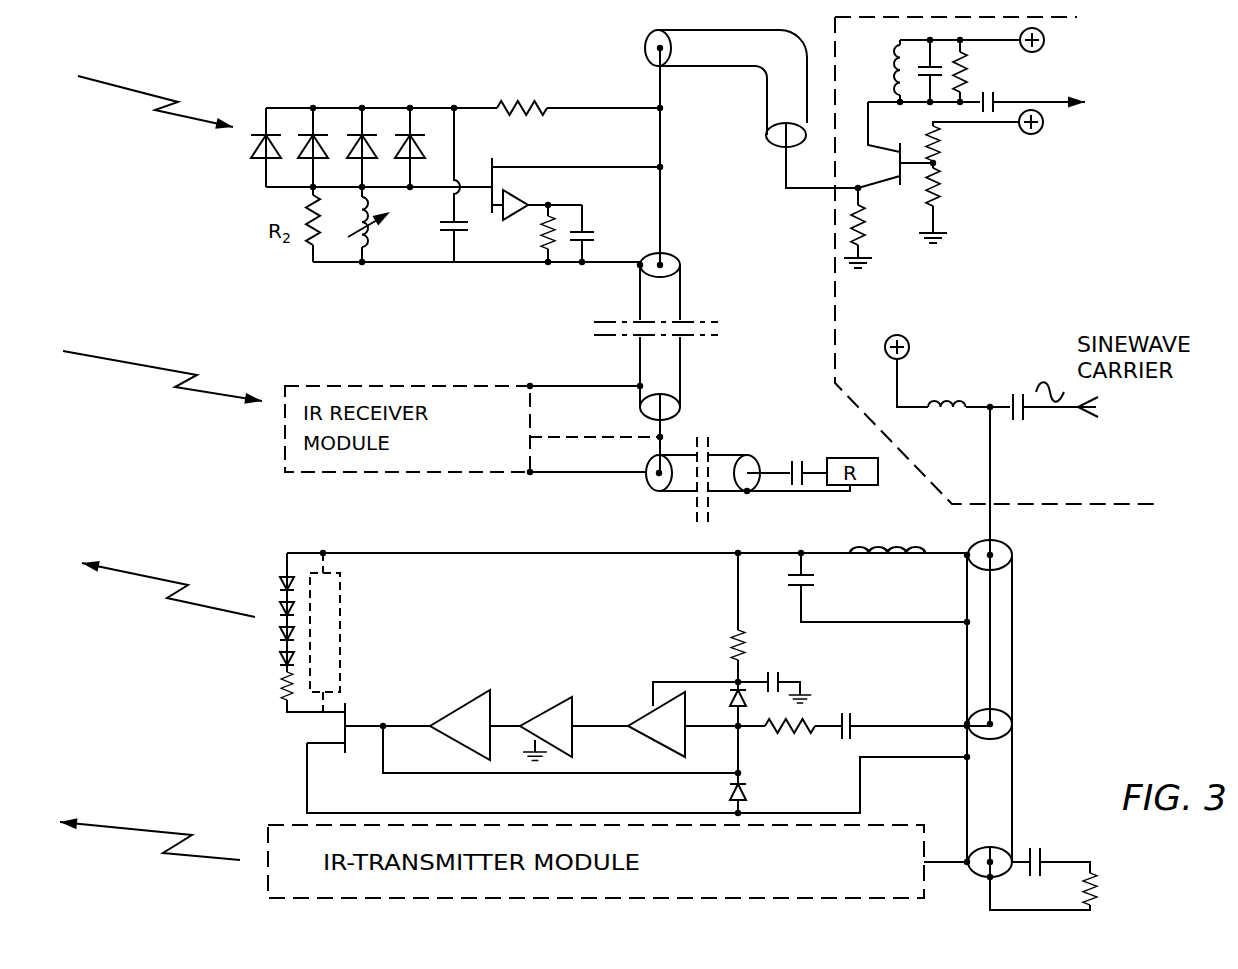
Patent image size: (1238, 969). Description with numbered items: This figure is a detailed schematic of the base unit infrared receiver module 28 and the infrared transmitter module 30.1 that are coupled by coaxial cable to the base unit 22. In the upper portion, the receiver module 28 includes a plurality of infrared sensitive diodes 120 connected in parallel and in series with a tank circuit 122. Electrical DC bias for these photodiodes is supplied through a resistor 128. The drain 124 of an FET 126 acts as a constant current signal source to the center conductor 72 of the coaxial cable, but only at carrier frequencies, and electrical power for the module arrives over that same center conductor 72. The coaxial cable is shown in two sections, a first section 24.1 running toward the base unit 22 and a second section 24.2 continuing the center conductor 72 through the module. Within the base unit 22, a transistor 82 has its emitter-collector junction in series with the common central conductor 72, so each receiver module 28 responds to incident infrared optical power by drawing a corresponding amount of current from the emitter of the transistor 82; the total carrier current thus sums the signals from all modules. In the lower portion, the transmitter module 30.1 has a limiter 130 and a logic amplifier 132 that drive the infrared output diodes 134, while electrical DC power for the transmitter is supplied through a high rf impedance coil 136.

The infrared sensitive diodes 120 is at (251, 118).
The tank circuit 122 is at (397, 246).
The base unit infrared receiver module 28 is at (462, 86).
The resistor 128 is at (548, 104).
The FET 126 is at (492, 172).
The drain 124 is at (556, 168).
The center conductor 72 is at (662, 141).
The coaxial cable 24.1 is at (717, 66).
The base unit 22 is at (1025, 204).
The transistor 82 is at (903, 180).
The coaxial cable 24.2 is at (681, 289).
The up-link infrared transmitter module 30.1 is at (615, 637).
The infrared output diodes 134 is at (258, 580).
The logic amplifier 132 is at (458, 706).
The limiter 130 is at (642, 727).
The high rf impedance coil 136 is at (903, 520).